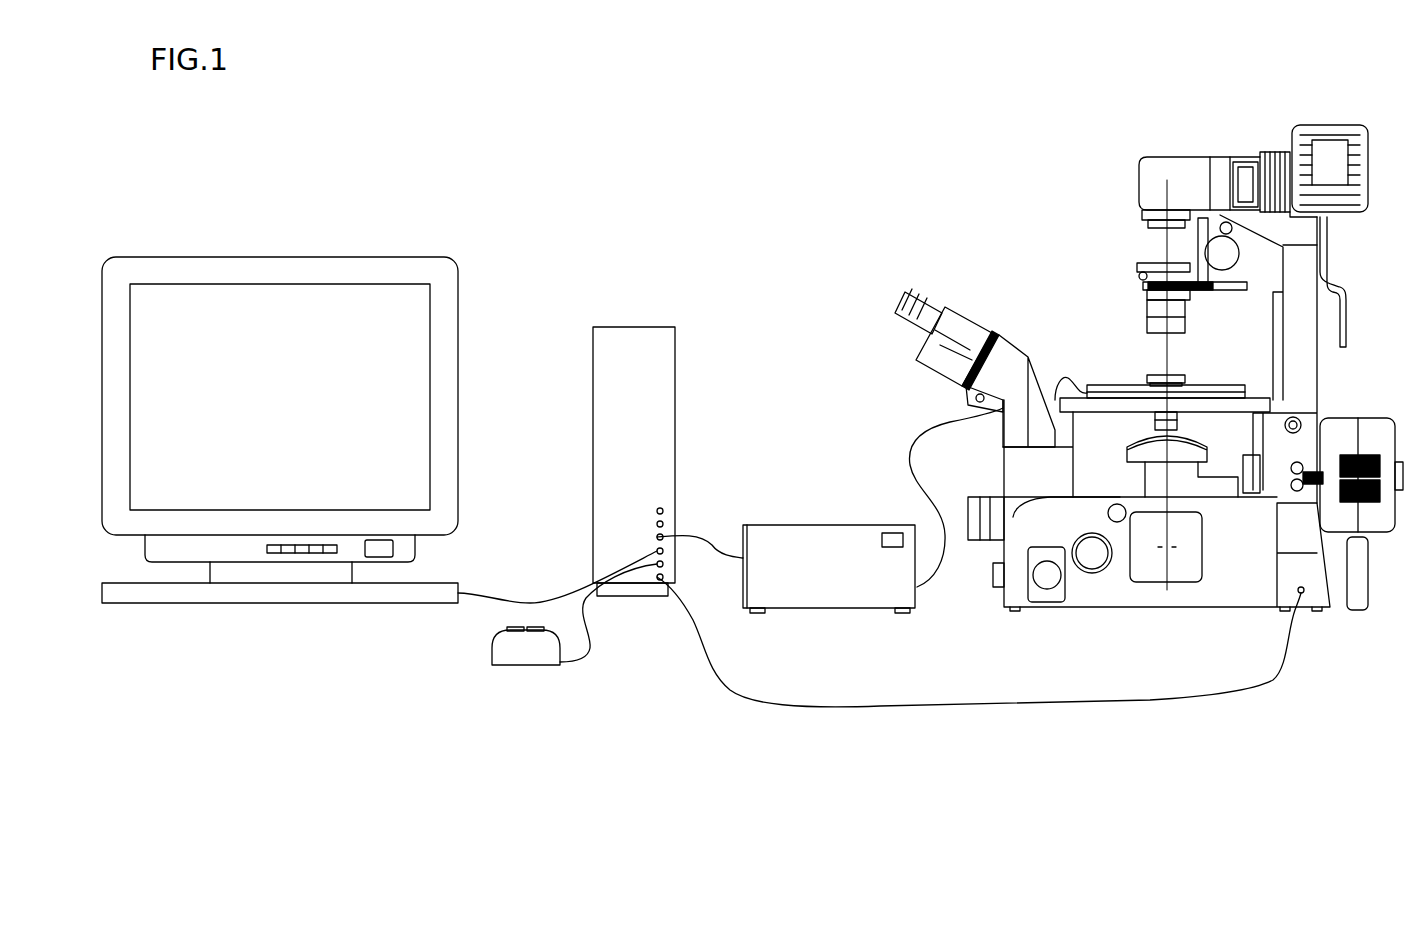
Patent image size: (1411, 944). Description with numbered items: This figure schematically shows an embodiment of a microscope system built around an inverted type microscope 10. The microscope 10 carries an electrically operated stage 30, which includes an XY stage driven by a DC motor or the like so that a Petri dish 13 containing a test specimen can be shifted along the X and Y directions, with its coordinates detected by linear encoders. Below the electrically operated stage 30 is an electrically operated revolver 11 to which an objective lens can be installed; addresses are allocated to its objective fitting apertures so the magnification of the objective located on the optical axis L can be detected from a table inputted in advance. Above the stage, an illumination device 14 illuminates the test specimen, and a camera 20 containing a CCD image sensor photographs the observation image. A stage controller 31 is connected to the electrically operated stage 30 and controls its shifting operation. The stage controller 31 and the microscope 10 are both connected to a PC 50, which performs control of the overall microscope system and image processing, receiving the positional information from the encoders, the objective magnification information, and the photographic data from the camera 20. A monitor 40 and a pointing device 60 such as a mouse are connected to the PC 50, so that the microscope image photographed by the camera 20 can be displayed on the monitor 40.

The inverted type microscope 10 is at (1078, 275).
The electrically operated revolver 11 is at (1138, 449).
The Petri dish 13 is at (1160, 380).
The illumination device 14 is at (1178, 178).
The camera 20 is at (1143, 572).
The electrically operated stage 30 is at (1108, 385).
The stage controller 31 is at (838, 580).
The monitor 40 is at (312, 300).
The PC 50 is at (612, 362).
The pointing device 60 is at (530, 657).
The optical axis L is at (1165, 247).